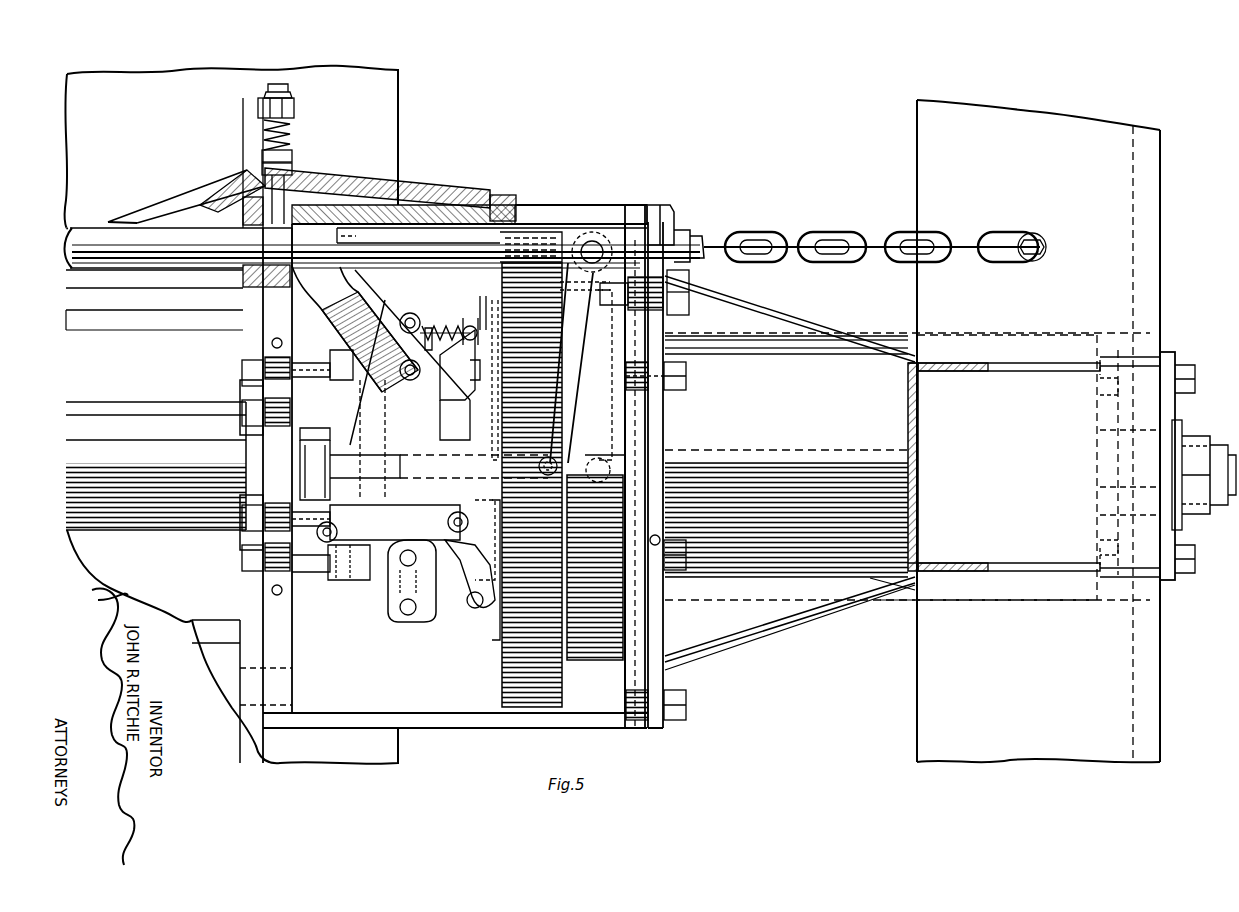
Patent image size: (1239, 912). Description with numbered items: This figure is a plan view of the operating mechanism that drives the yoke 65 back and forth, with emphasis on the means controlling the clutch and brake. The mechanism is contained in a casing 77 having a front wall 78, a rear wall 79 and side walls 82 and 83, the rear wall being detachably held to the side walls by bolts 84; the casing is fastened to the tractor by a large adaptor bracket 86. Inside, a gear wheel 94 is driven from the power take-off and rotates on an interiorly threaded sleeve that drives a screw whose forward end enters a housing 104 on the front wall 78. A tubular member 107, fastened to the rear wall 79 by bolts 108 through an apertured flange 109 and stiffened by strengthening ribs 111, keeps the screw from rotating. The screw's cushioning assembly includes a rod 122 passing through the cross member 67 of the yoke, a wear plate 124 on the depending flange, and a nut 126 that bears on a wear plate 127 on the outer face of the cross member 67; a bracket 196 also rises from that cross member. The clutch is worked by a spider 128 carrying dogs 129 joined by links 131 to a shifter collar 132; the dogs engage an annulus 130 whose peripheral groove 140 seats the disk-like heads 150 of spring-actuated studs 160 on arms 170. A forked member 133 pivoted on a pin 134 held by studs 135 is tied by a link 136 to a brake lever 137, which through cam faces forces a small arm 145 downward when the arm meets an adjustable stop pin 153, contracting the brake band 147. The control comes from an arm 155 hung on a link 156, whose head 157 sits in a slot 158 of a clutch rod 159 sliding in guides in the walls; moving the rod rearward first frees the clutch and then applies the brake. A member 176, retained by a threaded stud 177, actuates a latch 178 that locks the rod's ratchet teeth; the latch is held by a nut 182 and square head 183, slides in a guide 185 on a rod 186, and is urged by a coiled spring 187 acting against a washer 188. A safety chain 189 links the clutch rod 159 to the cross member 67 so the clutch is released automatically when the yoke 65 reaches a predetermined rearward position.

The yoke 65 is at (1172, 152).
The cross member 67 is at (1148, 212).
The casing 77 is at (444, 747).
The front wall 78 is at (263, 600).
The rear wall 79 is at (626, 728).
The side wall 82 is at (520, 730).
The side wall 83 is at (572, 205).
The bolts 84 is at (654, 204).
The adaptor bracket 86 is at (398, 98).
The gear wheel 94 is at (502, 702).
The housing 104 is at (160, 525).
The tubular member 107 is at (895, 605).
The bolts 108 is at (686, 388).
The apertured flange 109 is at (672, 672).
The strengthening ribs 111 is at (838, 320).
The rod 122 is at (1090, 497).
The wear plate 124 is at (1122, 352).
The nut 126 is at (1197, 436).
The wear plate 127 is at (1168, 350).
The spider 128 is at (462, 616).
The dogs 129 is at (452, 300).
The annulus 130 is at (498, 640).
The links 131 is at (390, 315).
The shifter collar 132 is at (362, 583).
The forked member 133 is at (320, 435).
The pin 134 is at (340, 582).
The studs 135 is at (312, 362).
The link 136 is at (330, 466).
The brake lever 137 is at (585, 395).
The peripheral groove 140 is at (500, 278).
The arm 145 is at (578, 303).
The brake band 147 is at (660, 455).
The disk-like heads 150 is at (472, 322).
The stop pin 153 is at (712, 302).
The arm 155 is at (292, 328).
The link 156 is at (390, 575).
The head 157 is at (345, 282).
The slot 158 is at (469, 247).
The clutch rod 159 is at (88, 226).
The spring-actuated studs 160 is at (440, 315).
The arms 170 is at (450, 326).
The member 176 is at (440, 193).
The threaded stud 177 is at (503, 194).
The latch 178 is at (268, 210).
The nut 182 is at (262, 165).
The square head 183 is at (325, 178).
The guide 185 is at (294, 112).
The rod 186 is at (289, 88).
The coiled spring 187 is at (292, 138).
The washer 188 is at (293, 158).
The safety chain 189 is at (835, 232).
The bracket 196 is at (908, 440).